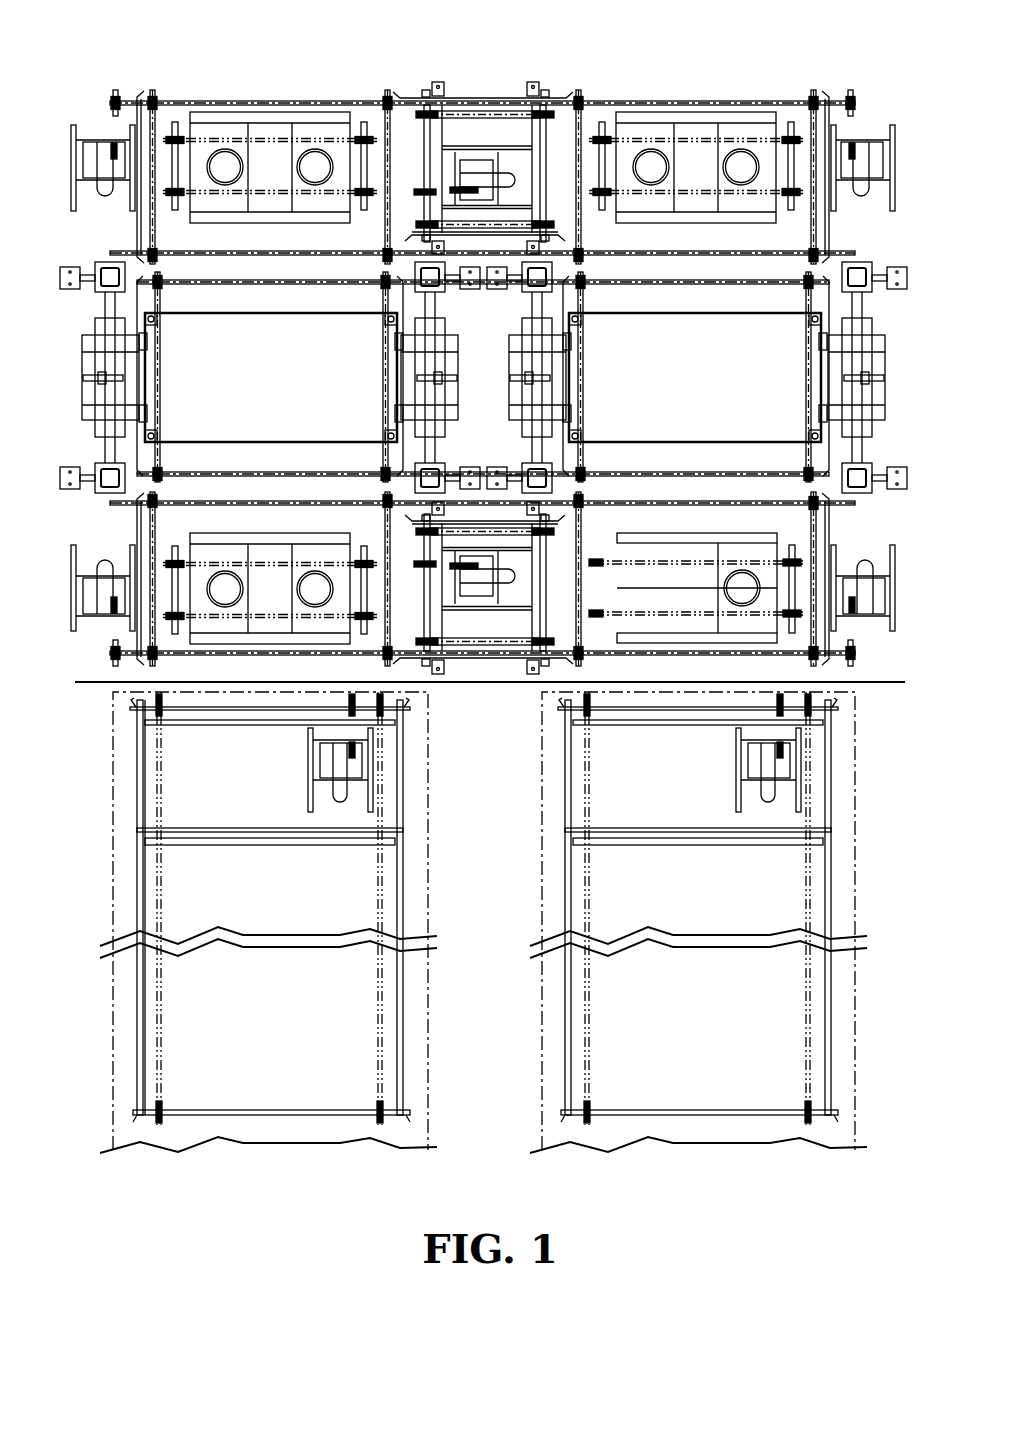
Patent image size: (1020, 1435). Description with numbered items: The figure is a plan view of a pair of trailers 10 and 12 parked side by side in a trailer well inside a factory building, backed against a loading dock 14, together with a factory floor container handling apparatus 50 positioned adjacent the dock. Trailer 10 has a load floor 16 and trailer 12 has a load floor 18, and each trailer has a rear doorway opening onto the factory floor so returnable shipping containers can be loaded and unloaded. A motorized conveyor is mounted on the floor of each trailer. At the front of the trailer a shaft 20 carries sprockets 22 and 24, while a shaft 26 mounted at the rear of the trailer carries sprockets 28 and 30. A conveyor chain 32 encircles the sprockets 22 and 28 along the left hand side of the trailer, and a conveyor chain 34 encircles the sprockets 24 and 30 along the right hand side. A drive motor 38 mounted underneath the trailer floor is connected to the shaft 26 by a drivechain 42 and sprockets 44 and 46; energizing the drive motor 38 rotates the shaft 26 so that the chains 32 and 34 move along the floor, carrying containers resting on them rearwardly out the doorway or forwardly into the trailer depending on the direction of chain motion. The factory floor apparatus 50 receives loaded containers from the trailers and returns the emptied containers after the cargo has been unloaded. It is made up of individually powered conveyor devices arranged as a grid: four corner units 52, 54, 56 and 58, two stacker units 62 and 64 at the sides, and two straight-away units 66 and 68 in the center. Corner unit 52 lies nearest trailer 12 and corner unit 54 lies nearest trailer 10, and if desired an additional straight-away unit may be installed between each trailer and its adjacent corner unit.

The trailer 10 is at (112, 906).
The trailer 12 is at (858, 1025).
The loading dock 14 is at (100, 685).
The load floor 16 is at (150, 767).
The load floor 18 is at (148, 1033).
The shaft 20 is at (682, 1110).
The sprocket 22 is at (590, 1120).
The sprocket 24 is at (808, 1120).
The shaft 26 is at (615, 724).
The sprocket 28 is at (581, 710).
The sprocket 30 is at (835, 718).
The conveyor chain 32 is at (589, 813).
The conveyor chain 34 is at (808, 1005).
The drive motor 38 is at (767, 769).
The drivechain 42 is at (770, 729).
The sprocket 44 is at (777, 751).
The sprocket 46 is at (776, 700).
The factory floor container handling apparatus 50 is at (511, 62).
The corner unit 52 is at (856, 540).
The corner unit 54 is at (113, 543).
The corner unit 56 is at (240, 92).
The corner unit 58 is at (716, 86).
The stacker unit 62 is at (68, 375).
The stacker unit 64 is at (898, 375).
The straight-away unit 66 is at (471, 672).
The straight-away unit 68 is at (482, 88).